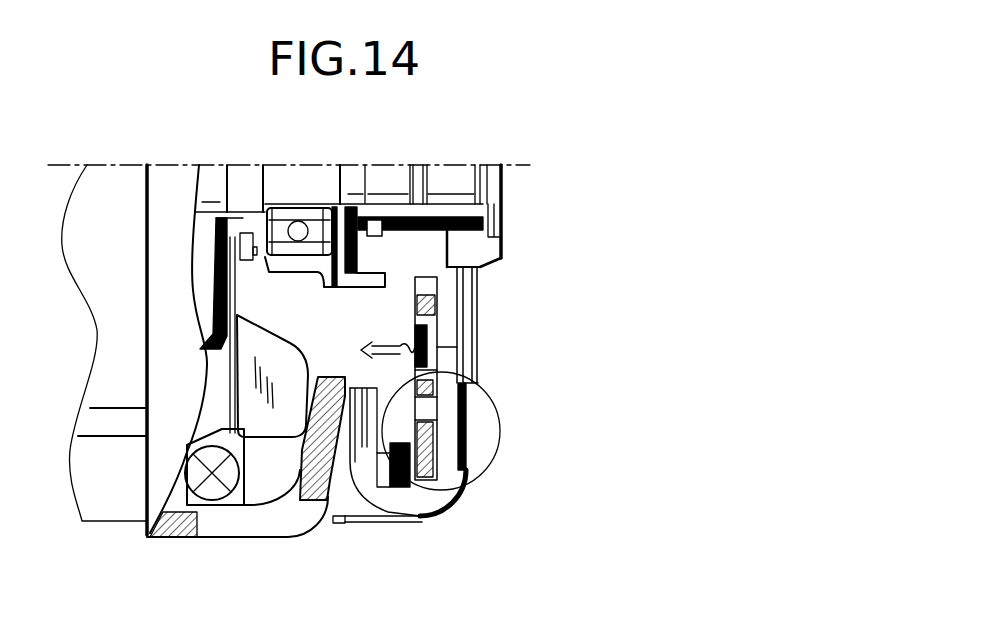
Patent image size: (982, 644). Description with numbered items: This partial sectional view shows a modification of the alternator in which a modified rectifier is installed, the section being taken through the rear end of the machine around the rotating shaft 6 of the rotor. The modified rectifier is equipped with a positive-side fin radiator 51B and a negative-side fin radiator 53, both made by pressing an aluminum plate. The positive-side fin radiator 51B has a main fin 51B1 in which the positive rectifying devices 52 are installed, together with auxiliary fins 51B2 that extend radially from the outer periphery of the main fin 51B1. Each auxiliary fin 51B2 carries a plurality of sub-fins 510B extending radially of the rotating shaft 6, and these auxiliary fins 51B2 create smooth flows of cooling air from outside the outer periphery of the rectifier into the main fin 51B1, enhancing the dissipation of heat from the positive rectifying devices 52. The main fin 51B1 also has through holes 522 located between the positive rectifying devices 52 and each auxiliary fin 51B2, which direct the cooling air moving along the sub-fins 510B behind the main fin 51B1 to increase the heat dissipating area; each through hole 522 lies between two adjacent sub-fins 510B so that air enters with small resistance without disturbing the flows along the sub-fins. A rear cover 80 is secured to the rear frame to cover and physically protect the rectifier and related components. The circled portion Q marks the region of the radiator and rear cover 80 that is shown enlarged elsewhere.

The rotating shaft 6 is at (211, 177).
The main fin 51B1 is at (437, 306).
The positive rectifying devices 52 is at (477, 347).
The positive-side fin radiator 51B is at (437, 387).
The through holes 522 is at (437, 408).
The portion Q is at (500, 428).
The auxiliary fins 51B2 is at (466, 433).
The sub-fins 510B is at (463, 490).
The rear cover 80 is at (425, 518).
The negative-side fin radiator 53 is at (340, 510).